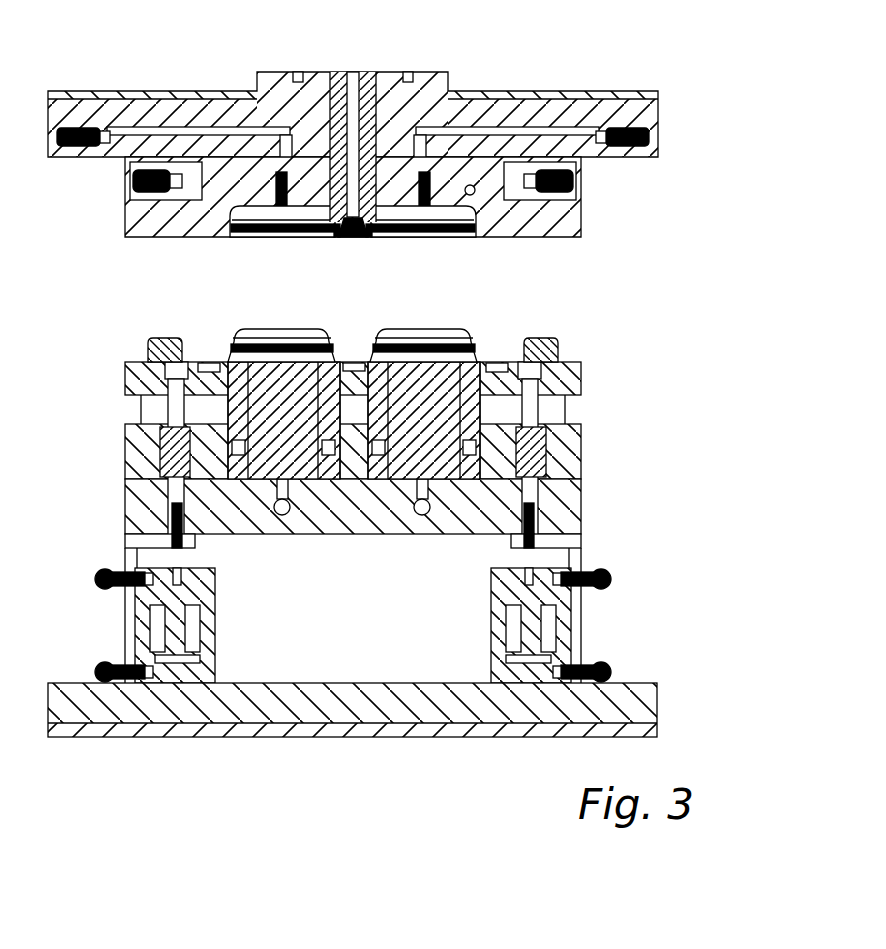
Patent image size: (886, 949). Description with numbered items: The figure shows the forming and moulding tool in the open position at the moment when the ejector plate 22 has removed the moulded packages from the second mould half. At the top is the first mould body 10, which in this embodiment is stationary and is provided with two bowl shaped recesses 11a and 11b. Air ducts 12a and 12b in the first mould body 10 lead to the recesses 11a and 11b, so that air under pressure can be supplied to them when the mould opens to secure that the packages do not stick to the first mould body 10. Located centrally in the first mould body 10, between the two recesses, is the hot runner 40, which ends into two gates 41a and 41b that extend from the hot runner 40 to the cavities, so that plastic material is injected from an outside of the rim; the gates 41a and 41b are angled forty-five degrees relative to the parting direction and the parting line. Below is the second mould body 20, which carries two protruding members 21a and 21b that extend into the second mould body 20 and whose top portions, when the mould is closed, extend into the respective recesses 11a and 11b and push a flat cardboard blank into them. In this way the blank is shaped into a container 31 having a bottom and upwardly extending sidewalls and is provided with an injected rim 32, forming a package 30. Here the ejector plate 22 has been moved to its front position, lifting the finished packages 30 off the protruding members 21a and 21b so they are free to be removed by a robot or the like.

The first mould body 10 is at (703, 148).
The air duct 12a is at (510, 138).
The air duct 12b is at (183, 137).
The bowl shaped recess 11a is at (457, 244).
The bowl shaped recess 11b is at (250, 246).
The hot runner 40 is at (388, 73).
The gate 41a is at (338, 233).
The gate 41b is at (367, 240).
The second mould body 20 is at (655, 469).
The ejector plate 22 is at (584, 377).
The protruding member 21a is at (424, 437).
The protruding member 21b is at (283, 437).
The package 30 is at (318, 325).
The container 31 is at (328, 340).
The rim 32 is at (225, 358).